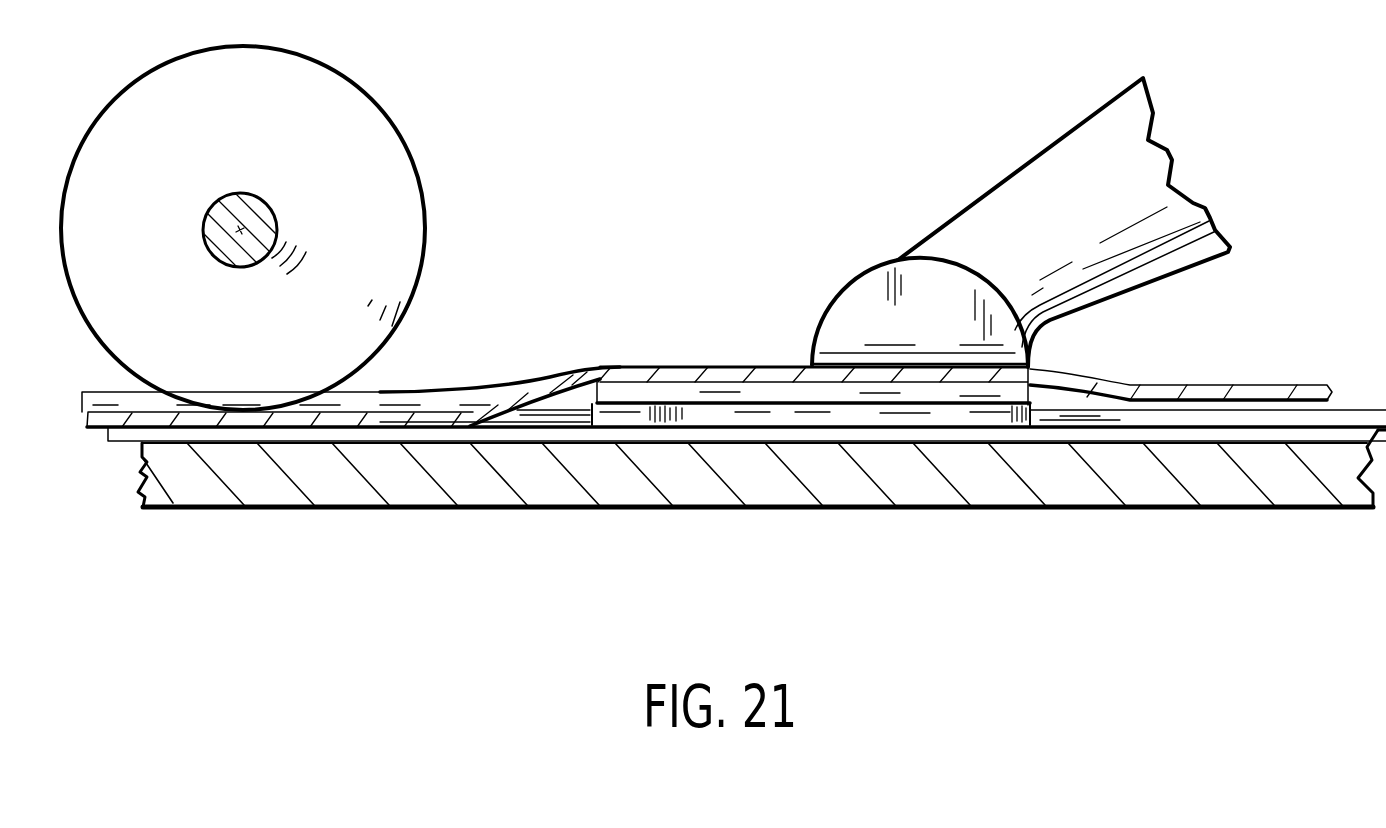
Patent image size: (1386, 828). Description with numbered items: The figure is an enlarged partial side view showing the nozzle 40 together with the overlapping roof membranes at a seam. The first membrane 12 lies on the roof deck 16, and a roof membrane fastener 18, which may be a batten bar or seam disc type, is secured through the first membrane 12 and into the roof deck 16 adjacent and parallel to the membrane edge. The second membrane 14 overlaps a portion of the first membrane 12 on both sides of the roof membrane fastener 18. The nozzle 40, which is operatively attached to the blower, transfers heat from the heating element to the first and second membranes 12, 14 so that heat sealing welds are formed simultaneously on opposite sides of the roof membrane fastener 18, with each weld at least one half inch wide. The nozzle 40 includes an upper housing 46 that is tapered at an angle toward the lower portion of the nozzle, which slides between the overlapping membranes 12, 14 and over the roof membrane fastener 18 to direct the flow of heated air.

The first membrane 12 is at (732, 438).
The second membrane 14 is at (593, 377).
The roof deck 16 is at (1138, 470).
The roof membrane fastener 18 is at (928, 420).
The nozzle 40 is at (1021, 222).
The upper housing 46 is at (1123, 275).